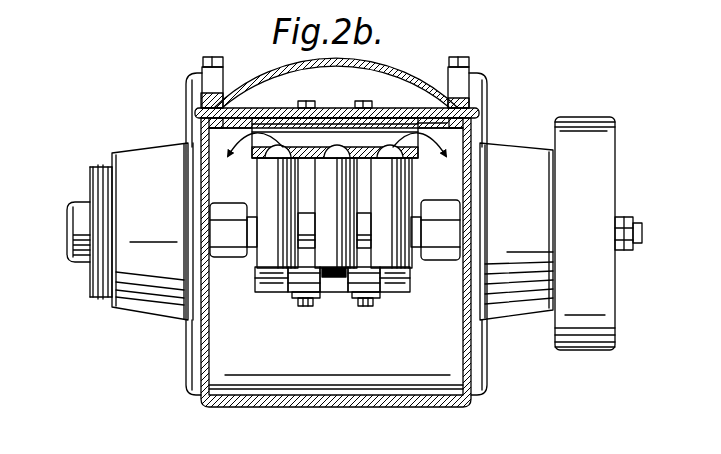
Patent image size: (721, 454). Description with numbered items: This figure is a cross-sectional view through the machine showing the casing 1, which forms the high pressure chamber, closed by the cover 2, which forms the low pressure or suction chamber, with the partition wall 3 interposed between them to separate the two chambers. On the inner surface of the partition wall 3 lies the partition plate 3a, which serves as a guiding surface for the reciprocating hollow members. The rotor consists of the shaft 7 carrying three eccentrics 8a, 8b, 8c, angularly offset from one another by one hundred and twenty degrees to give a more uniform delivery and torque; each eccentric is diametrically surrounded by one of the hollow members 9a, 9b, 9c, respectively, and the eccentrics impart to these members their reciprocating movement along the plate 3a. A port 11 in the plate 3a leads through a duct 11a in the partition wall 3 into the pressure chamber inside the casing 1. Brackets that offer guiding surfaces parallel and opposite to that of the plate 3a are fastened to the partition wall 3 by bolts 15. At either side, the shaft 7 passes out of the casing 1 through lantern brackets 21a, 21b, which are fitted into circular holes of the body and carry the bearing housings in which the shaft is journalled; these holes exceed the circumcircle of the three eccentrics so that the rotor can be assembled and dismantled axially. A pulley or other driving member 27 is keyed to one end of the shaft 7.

The casing 1 is at (221, 401).
The cover 2 is at (414, 69).
The partition wall 3 is at (330, 108).
The partition plate 3a is at (339, 162).
The shaft 7 is at (418, 228).
The eccentric 8a is at (398, 290).
The eccentric 8b is at (335, 285).
The eccentric 8c is at (278, 285).
The hollow member 9a is at (384, 257).
The hollow member 9b is at (328, 255).
The hollow member 9c is at (272, 247).
The port 11 is at (397, 153).
The duct 11a is at (280, 134).
The bolts 15 is at (366, 303).
The lantern bracket 21a is at (536, 313).
The lantern bracket 21b is at (167, 320).
The pulley 27 is at (593, 114).